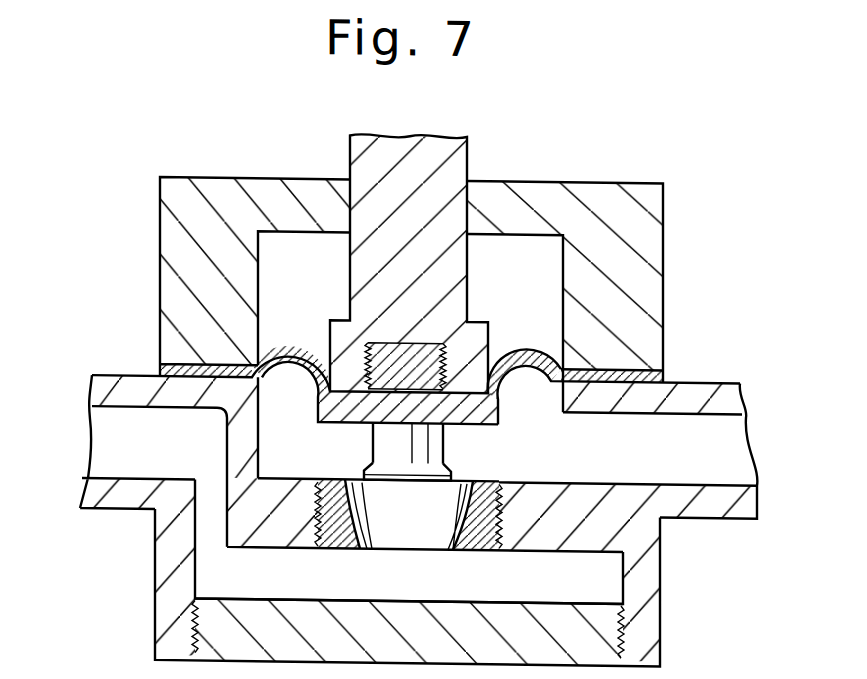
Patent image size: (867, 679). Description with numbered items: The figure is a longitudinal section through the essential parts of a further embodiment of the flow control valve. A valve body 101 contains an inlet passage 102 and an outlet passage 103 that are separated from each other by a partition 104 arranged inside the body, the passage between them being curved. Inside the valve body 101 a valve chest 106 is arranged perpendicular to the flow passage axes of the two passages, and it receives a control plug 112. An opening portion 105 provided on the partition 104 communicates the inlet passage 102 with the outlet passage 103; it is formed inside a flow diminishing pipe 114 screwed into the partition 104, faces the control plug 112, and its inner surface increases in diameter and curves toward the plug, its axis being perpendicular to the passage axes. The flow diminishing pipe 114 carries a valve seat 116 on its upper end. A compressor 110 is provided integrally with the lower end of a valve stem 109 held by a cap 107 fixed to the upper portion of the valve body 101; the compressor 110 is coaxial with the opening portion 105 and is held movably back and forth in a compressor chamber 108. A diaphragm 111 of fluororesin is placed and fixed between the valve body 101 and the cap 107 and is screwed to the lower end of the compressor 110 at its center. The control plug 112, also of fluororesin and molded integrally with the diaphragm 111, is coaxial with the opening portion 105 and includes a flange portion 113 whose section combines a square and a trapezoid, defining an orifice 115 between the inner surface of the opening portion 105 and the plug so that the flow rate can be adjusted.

The valve body 101 is at (665, 608).
The inlet passage 102 is at (110, 447).
The outlet passage 103 is at (735, 448).
The partition 104 is at (274, 546).
The opening portion 105 is at (408, 546).
The valve chest 106 is at (275, 436).
The cap 107 is at (663, 237).
The compressor chamber 108 is at (533, 242).
The valve stem 109 is at (462, 158).
The compressor 110 is at (332, 334).
The diaphragm 111 is at (528, 345).
The control plug 112 is at (443, 446).
The flange portion 113 is at (364, 465).
The flow diminishing pipe 114 is at (480, 547).
The orifice 115 is at (357, 484).
The valve seat 116 is at (500, 464).